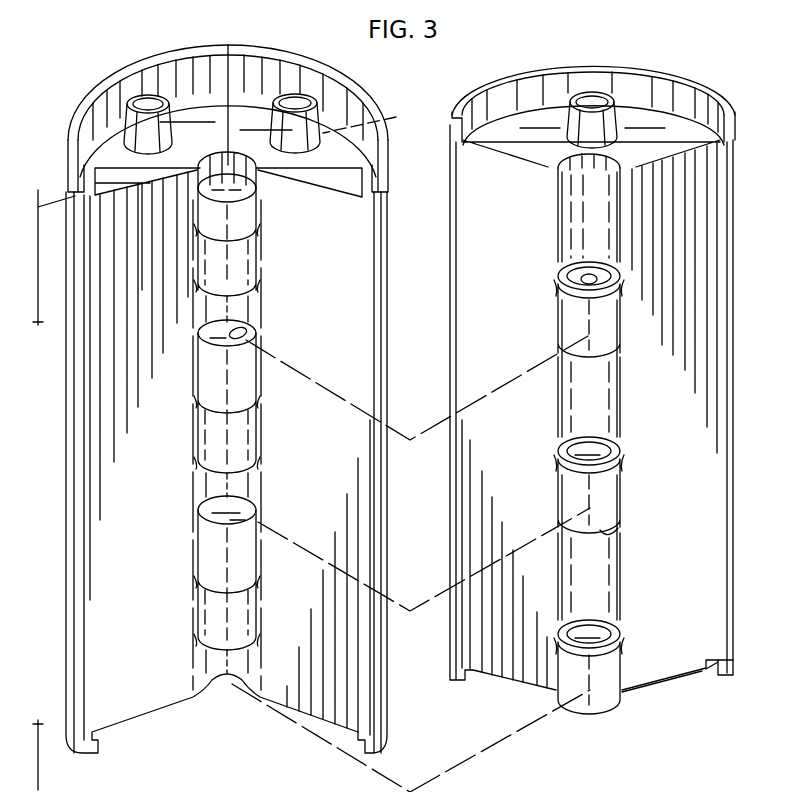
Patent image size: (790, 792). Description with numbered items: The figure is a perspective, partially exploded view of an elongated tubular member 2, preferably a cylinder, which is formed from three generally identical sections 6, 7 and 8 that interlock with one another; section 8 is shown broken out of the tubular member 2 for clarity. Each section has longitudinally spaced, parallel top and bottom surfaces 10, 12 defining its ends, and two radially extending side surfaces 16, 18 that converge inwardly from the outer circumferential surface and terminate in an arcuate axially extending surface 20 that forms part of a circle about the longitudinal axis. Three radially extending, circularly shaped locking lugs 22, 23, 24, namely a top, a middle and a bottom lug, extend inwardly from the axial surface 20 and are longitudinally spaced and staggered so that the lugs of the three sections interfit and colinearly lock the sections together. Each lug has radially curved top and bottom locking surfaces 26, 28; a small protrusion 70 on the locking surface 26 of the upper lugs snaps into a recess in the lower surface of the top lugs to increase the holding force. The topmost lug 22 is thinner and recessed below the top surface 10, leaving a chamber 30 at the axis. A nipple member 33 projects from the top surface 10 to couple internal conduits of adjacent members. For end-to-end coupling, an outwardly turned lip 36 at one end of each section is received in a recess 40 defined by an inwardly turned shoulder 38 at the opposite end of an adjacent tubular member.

The tubular member 2 is at (331, 56).
The section 7 is at (381, 99).
The section 6 is at (399, 118).
The nipple member 33 is at (162, 97).
The chamber 30 is at (233, 158).
The locking lug 22 is at (246, 212).
The protrusion 70 is at (235, 334).
The locking lug 23 is at (247, 383).
The locking lug 24 is at (247, 555).
The section 8 is at (589, 56).
The lip 36 is at (703, 88).
The top surface 10 is at (702, 145).
The side surface 16 is at (500, 317).
The side surface 18 is at (676, 392).
The axial surface 20 is at (575, 207).
The top surface of locking lug 26 is at (572, 276).
The bottom surface of locking lug 28 is at (609, 537).
The bottom surface 12 is at (640, 684).
The shoulder 38 is at (718, 673).
The recess 40 is at (731, 658).